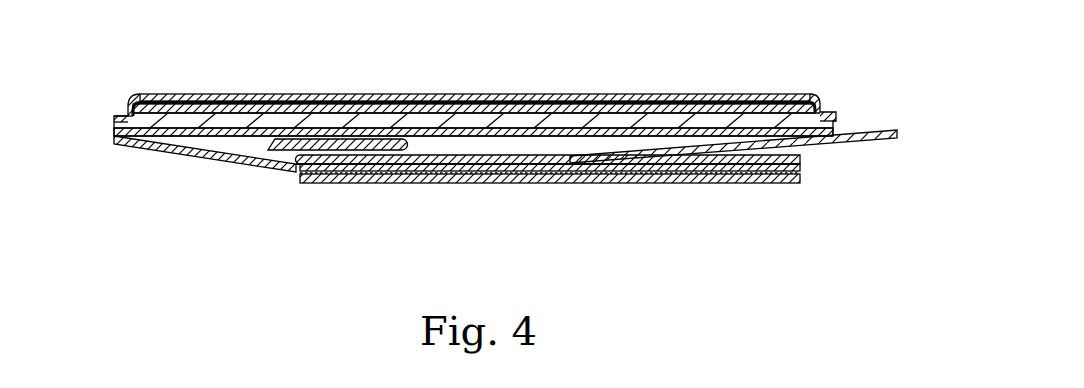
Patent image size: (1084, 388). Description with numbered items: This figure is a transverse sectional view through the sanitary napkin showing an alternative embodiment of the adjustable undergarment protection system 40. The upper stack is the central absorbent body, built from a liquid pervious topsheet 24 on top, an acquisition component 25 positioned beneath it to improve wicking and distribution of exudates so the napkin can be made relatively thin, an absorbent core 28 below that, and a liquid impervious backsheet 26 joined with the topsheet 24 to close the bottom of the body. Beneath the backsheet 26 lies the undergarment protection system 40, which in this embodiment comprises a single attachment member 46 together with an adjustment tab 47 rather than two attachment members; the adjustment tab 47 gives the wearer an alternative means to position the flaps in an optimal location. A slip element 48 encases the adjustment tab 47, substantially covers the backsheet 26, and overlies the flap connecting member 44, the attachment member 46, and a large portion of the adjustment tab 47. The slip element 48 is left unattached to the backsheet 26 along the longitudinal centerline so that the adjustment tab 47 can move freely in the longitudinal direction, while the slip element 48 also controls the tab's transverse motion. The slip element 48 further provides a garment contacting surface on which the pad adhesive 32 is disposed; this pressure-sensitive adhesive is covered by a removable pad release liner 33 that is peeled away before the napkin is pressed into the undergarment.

The topsheet 24 is at (582, 93).
The acquisition component 25 is at (690, 93).
The absorbent core 28 is at (785, 93).
The backsheet 26 is at (812, 152).
The pad adhesive 32 is at (802, 166).
The pad release liner 33 is at (727, 184).
The flap connecting member 44 is at (418, 183).
The attachment member 46 is at (268, 160).
The adjustment tab 47 is at (877, 141).
The slip element 48 is at (158, 151).
The adjustable undergarment protection system 40 is at (815, 214).